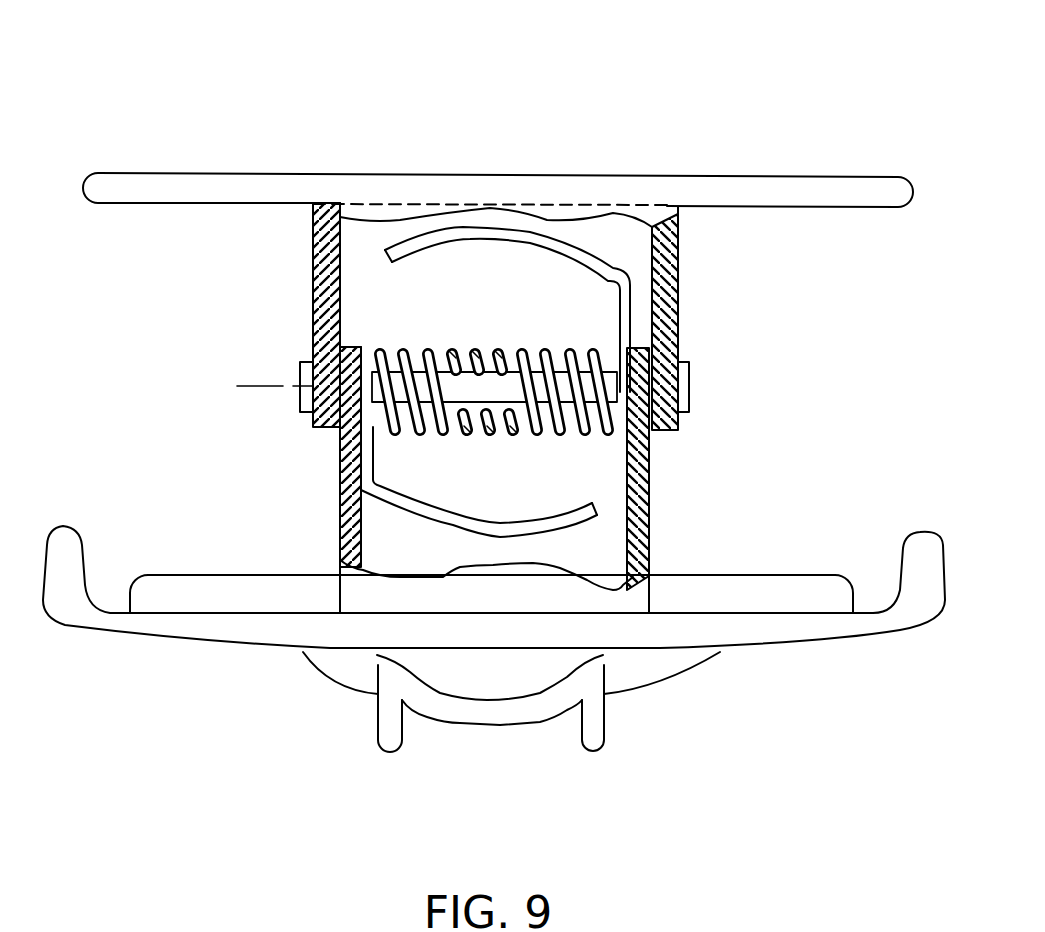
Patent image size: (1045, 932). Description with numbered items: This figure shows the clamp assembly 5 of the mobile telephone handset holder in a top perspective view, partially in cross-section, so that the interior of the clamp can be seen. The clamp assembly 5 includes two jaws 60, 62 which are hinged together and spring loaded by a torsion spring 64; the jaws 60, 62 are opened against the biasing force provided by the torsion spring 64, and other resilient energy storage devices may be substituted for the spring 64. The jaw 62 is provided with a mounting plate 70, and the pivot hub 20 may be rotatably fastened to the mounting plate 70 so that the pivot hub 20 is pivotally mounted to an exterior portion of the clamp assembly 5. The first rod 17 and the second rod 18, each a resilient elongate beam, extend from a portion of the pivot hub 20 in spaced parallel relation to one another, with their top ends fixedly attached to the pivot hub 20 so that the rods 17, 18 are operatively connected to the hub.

The clamp assembly 5 is at (140, 391).
The first rod 17 is at (389, 750).
The second rod 18 is at (594, 750).
The pivot hub 20 is at (630, 668).
The jaw 60 is at (833, 176).
The jaw 62 is at (786, 655).
The torsion spring 64 is at (402, 347).
The mounting plate 70 is at (715, 587).